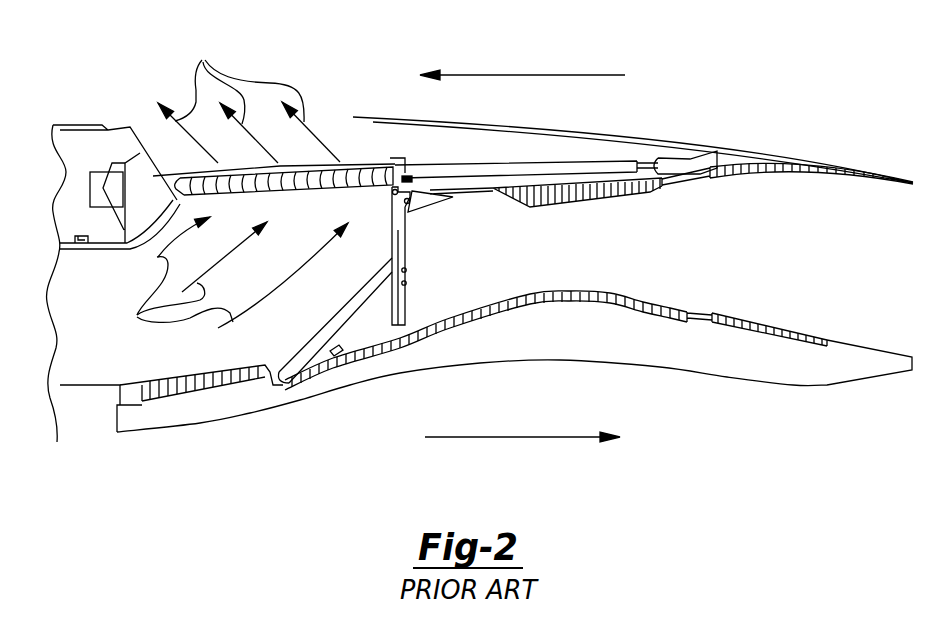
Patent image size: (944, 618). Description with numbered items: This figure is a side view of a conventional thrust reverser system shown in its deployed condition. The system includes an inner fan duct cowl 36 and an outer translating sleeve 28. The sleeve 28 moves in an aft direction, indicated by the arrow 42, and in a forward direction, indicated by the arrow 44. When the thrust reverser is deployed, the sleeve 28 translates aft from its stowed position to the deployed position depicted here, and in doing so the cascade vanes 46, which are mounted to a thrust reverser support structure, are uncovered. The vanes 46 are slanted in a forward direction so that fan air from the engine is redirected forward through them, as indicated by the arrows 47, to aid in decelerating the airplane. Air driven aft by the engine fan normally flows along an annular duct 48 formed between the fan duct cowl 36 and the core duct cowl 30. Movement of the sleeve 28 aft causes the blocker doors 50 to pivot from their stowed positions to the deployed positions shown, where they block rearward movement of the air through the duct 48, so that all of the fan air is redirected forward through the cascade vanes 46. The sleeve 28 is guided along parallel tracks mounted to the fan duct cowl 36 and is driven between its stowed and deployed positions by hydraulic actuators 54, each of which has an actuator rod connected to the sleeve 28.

The translating sleeve 28 is at (608, 130).
The core duct cowl 30 is at (612, 292).
The fan duct cowl 36 is at (613, 195).
The aft direction arrow 42 is at (553, 437).
The forward direction arrow 44 is at (543, 73).
The cascade vanes 46 is at (321, 200).
The redirected fan air arrows 47 is at (232, 188).
The annular duct 48 is at (566, 263).
The blocker doors 50 is at (418, 294).
The hydraulic actuator 54 is at (468, 158).